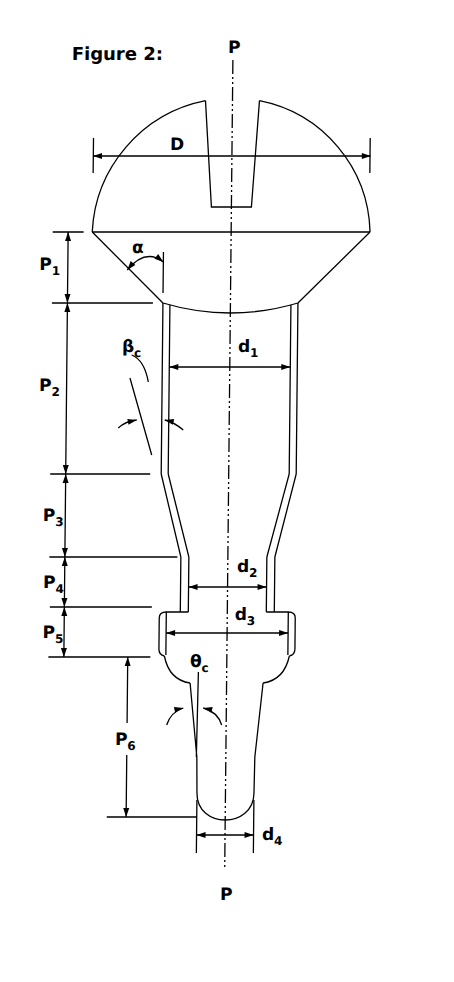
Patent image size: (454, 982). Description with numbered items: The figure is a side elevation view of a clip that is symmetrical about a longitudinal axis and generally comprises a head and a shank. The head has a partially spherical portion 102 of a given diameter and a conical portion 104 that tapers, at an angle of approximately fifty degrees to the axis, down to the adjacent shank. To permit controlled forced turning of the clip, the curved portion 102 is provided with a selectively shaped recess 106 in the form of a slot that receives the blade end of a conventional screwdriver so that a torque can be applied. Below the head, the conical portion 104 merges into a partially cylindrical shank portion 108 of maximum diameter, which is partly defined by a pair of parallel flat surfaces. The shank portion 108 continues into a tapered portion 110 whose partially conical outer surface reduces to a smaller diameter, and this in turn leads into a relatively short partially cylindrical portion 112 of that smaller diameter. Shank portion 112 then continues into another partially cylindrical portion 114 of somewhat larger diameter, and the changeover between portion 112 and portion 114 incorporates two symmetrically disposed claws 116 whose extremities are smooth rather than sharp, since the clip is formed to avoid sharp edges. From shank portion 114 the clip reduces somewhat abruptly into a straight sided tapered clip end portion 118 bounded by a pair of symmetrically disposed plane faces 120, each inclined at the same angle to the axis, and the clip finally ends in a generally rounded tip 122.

The partially spherical portion 102 is at (302, 145).
The conical portion 104 is at (327, 278).
The recess 106 is at (243, 112).
The partially cylindrical shank portion 108 is at (304, 415).
The tapered portion 110 is at (295, 512).
The partially cylindrical portion 112 is at (281, 595).
The partially cylindrical portion 114 is at (284, 648).
The claws 116 is at (168, 608).
The clip end portion 118 is at (272, 708).
The plane faces 120 is at (268, 750).
The rounded tip 122 is at (231, 821).